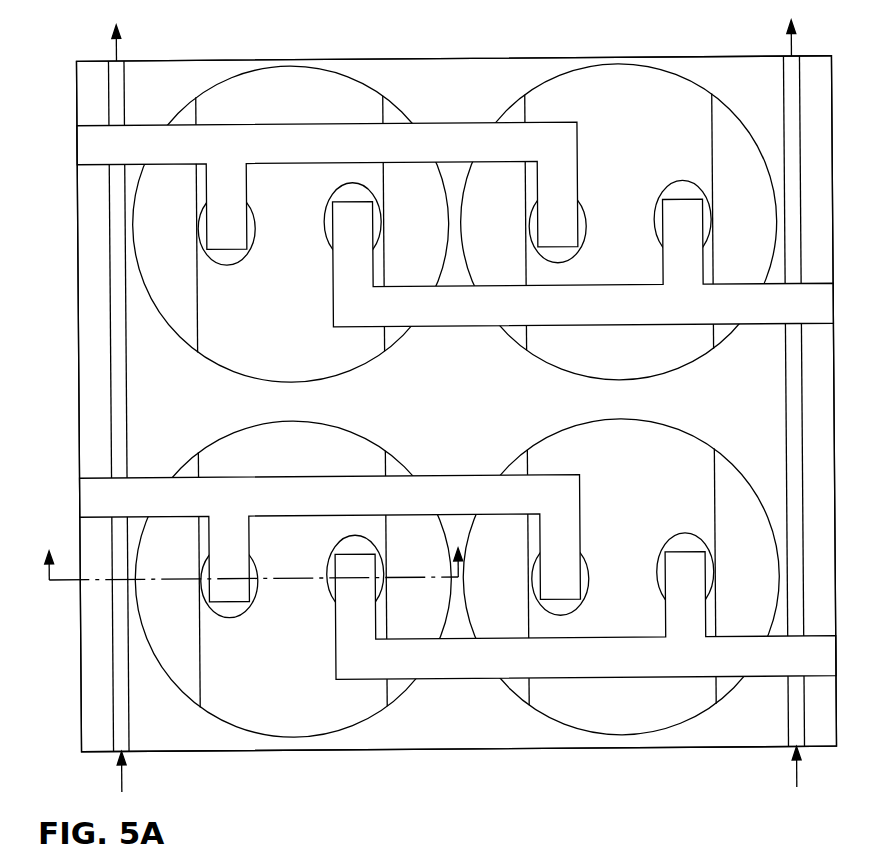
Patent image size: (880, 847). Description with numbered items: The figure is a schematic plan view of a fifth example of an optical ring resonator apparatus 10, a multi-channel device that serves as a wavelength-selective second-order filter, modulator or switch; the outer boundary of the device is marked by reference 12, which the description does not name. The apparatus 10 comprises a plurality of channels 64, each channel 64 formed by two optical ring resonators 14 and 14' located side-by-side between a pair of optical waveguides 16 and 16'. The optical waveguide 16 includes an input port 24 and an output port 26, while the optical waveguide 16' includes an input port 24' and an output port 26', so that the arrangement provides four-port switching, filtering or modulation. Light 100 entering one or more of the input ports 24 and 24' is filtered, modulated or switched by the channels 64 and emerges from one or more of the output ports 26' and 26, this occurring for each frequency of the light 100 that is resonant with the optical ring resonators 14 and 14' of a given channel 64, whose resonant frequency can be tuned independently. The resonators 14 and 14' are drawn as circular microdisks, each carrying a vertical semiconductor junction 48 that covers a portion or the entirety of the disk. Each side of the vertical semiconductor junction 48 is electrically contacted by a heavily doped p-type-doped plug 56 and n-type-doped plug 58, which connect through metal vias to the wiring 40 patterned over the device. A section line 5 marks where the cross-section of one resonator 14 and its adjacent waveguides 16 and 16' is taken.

The optical ring resonator apparatus 10 is at (680, 762).
The outer frame 12 is at (82, 702).
The optical ring resonator 14 is at (291, 402).
The optical ring resonator 14' is at (620, 399).
The optical waveguide 16 is at (153, 406).
The optical waveguide 16' is at (764, 401).
The input port 24 is at (146, 406).
The input port 24' is at (768, 401).
The output port 26 is at (142, 56).
The output port 26' is at (761, 51).
The wiring 40 is at (143, 150).
The vertical semiconductor junction 48 is at (281, 106).
The p-type-doped plug 56 is at (241, 260).
The n-type-doped plug 58 is at (339, 190).
The channel 64 is at (171, 405).
The light 100 is at (118, 779).
The section line 5 is at (253, 550).